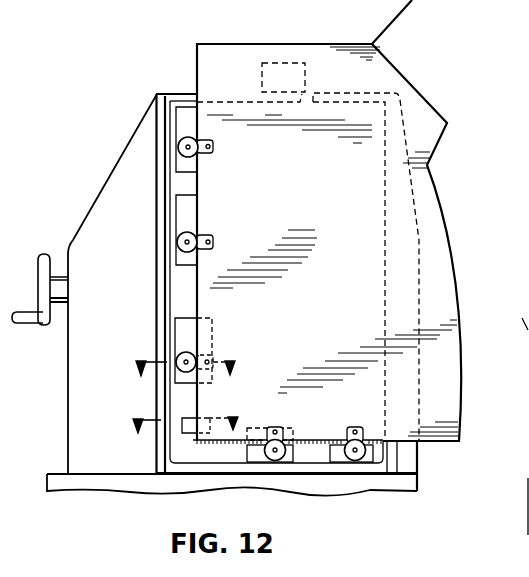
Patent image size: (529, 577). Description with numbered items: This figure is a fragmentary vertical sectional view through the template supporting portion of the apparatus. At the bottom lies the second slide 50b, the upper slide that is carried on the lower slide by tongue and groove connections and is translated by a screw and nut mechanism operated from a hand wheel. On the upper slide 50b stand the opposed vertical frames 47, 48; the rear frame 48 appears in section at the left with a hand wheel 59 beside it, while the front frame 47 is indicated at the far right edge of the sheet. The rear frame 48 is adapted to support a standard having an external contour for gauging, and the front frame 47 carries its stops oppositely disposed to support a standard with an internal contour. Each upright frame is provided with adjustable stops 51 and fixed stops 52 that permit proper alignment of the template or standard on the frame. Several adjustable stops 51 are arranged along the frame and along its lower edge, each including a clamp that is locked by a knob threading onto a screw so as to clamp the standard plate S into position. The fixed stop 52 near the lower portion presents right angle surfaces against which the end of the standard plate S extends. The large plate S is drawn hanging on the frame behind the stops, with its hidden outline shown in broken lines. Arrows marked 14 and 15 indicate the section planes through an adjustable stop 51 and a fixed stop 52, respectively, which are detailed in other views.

The rear frame 48 is at (108, 178).
The handle 59 is at (42, 255).
The adjustable stop 51 is at (194, 153).
The fixed stop 52 is at (188, 433).
The second slide 50b is at (302, 482).
The standard plate S is at (412, 97).
The section line of FIG. 14 is at (186, 376).
The section line of FIG. 15 is at (182, 423).
The front frame 47 is at (518, 314).